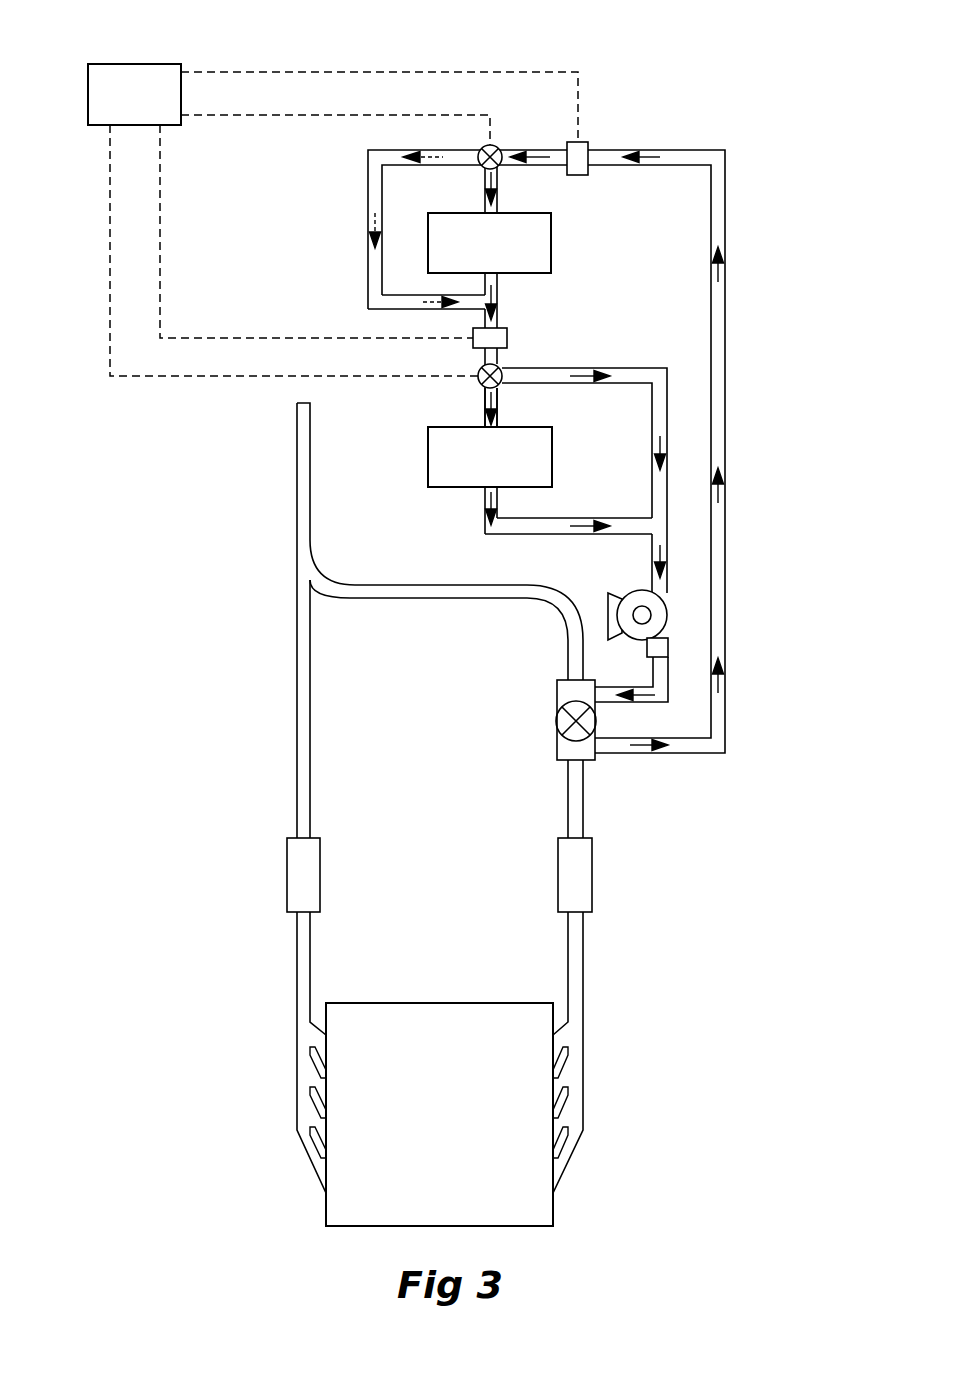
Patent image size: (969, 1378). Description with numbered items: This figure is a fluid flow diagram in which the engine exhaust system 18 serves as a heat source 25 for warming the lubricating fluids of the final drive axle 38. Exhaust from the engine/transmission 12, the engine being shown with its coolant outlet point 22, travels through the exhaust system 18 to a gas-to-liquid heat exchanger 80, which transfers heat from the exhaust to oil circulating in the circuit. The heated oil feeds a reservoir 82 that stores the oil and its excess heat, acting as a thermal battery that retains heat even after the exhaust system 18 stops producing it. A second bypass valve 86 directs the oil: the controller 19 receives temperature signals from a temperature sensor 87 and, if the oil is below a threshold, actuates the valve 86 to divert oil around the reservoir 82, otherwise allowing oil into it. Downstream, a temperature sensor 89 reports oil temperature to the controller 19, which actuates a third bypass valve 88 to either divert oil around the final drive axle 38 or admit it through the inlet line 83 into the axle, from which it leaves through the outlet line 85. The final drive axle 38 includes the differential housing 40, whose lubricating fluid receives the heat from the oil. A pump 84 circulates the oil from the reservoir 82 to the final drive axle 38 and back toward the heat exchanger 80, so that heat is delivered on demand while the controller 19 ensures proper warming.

The controller 19 is at (108, 64).
The second bypass valve 86 is at (482, 148).
The temperature sensor 87 is at (588, 145).
The reservoir 82 is at (552, 243).
The temperature sensor 89 is at (507, 338).
The third bypass valve 88 is at (500, 368).
The inlet conduit 83 is at (485, 430).
The outlet conduit 85 is at (485, 489).
The housing 40 is at (558, 424).
The final drive axle 38 is at (555, 455).
The pump 84 is at (638, 591).
The heat exchanger 80 is at (557, 688).
The exhaust system 18 is at (297, 422).
The heat source 25 is at (323, 487).
The engine/transmission 12 is at (522, 1035).
The heated coolant outlet 22 is at (439, 1114).